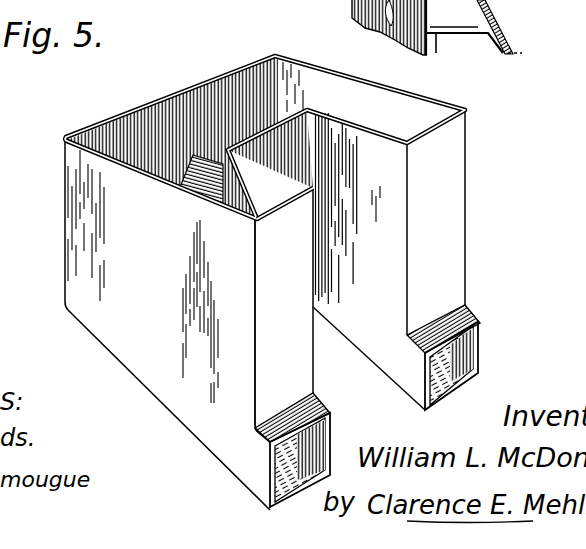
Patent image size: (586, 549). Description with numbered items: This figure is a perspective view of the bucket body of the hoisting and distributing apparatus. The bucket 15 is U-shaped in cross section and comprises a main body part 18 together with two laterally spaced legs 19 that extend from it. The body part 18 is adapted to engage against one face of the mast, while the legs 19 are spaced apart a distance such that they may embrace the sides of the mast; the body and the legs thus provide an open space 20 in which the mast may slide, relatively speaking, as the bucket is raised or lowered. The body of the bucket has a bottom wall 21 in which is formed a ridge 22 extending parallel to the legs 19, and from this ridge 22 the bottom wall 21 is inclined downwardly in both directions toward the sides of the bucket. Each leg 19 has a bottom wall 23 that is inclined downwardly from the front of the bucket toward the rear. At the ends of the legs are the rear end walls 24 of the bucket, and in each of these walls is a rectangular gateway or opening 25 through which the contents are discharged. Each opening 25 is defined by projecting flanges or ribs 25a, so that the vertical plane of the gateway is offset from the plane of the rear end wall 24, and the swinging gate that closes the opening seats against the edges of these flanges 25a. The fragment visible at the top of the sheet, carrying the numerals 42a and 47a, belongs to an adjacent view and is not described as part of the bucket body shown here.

In FIG. 5, the bucket 15 is at (286, 283).
In FIG. 5, the main body part 18 is at (154, 104).
In FIG. 5, the leg 19 is at (477, 206).
In FIG. 5, the open space 20 is at (382, 141).
In FIG. 5, the bottom wall 21 is at (104, 342).
In FIG. 5, the ridge 22 is at (196, 157).
In FIG. 5, the bottom wall of leg 23 is at (213, 456).
In FIG. 5, the rear end wall 24 is at (344, 277).
In FIG. 5, the gateway or opening 25 is at (318, 440).
In FIG. 5, the projecting flange or rib 25a is at (319, 404).
In FIG. 4, the bracket 42a is at (473, 31).
In FIG. 4, the member 47a is at (390, 13).